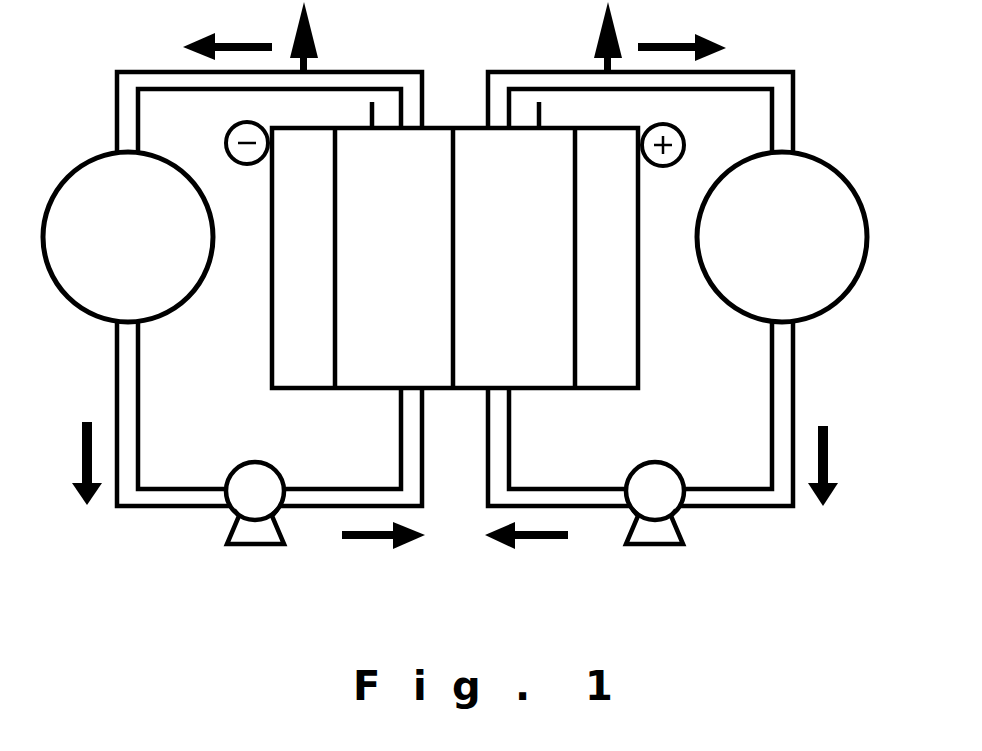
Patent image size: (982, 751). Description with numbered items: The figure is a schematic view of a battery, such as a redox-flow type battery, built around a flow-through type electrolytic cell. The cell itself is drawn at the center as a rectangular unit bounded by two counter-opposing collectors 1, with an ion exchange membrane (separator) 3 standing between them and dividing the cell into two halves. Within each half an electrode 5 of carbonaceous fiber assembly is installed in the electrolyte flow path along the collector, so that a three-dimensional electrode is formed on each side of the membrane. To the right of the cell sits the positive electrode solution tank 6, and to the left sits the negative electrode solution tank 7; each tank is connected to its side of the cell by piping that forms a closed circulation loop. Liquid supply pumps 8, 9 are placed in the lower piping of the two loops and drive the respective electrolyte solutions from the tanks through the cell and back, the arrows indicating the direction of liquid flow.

The collector 1 is at (292, 307).
The ion exchange membrane (separator) 3 is at (456, 157).
The electrode 5 is at (372, 372).
The positive electrode solution tank 6 is at (820, 275).
The negative electrode solution tank 7 is at (118, 302).
The liquid supply pump 8 is at (663, 527).
The liquid supply pump 9 is at (247, 537).